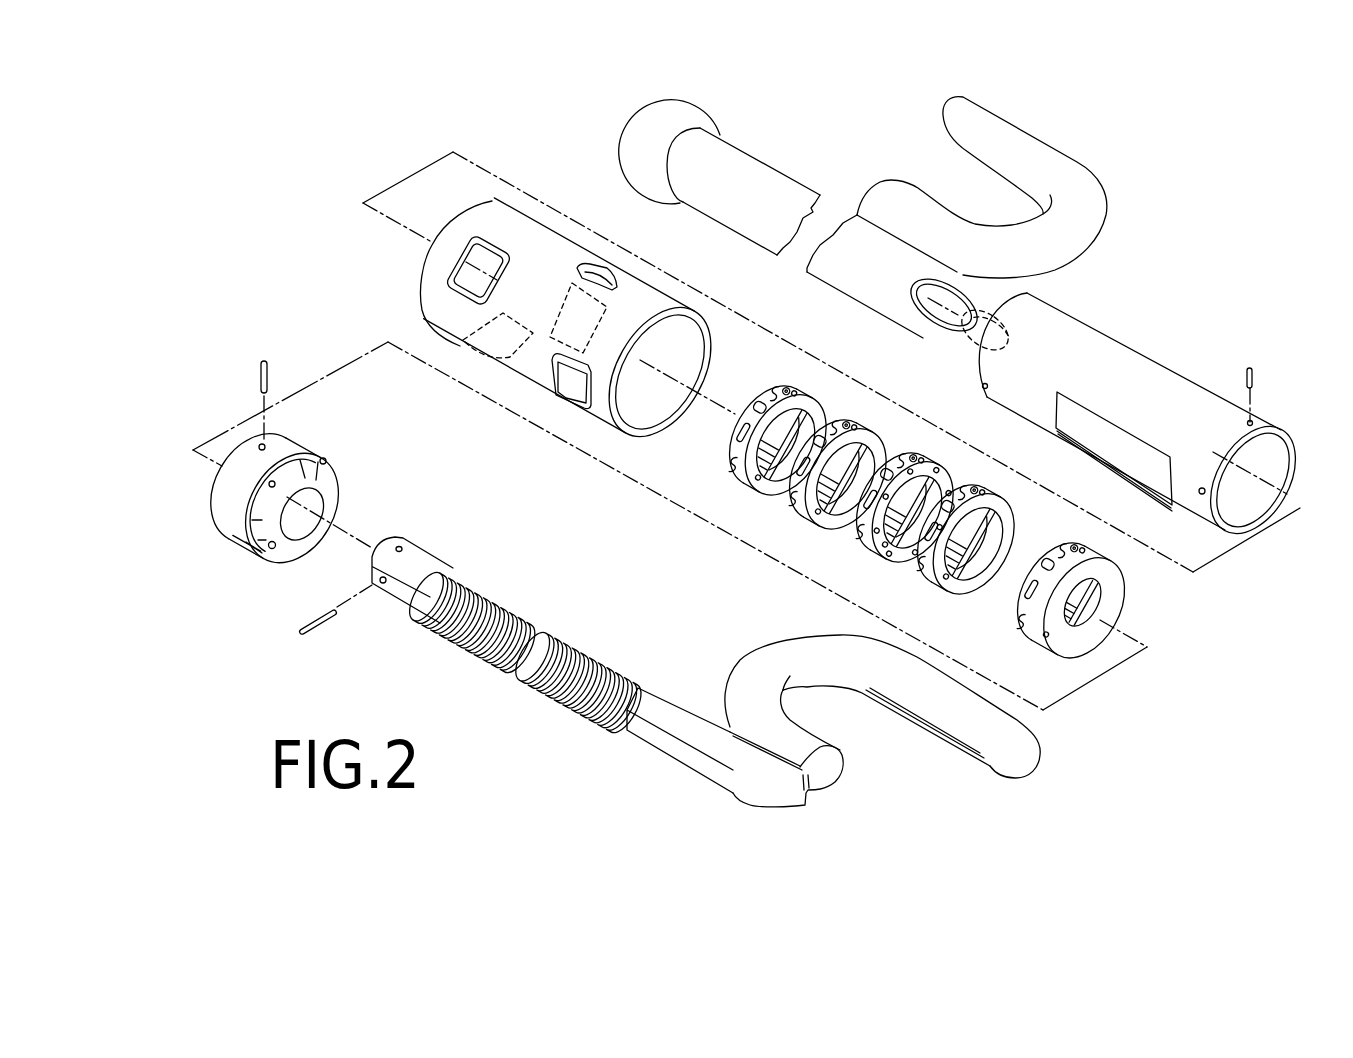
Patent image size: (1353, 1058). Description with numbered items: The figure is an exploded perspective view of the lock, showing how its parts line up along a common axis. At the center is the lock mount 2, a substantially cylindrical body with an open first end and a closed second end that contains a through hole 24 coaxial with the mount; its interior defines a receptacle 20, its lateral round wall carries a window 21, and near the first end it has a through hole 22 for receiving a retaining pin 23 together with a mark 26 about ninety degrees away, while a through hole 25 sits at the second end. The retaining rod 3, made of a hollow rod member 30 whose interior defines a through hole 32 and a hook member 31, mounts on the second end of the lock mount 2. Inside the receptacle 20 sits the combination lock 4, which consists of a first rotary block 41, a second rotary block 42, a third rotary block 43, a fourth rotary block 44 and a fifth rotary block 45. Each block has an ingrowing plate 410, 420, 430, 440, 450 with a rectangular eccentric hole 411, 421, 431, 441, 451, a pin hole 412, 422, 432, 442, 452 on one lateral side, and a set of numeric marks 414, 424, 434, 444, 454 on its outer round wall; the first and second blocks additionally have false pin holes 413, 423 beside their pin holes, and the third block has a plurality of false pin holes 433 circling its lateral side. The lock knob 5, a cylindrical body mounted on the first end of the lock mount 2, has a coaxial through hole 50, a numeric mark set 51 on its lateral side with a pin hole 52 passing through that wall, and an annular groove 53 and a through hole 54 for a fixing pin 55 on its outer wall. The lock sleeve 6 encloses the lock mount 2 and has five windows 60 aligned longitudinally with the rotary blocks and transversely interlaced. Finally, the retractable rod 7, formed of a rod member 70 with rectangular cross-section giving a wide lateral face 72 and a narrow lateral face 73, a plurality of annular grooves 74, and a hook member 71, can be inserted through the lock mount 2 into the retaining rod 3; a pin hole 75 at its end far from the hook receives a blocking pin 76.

The lock mount 2 is at (1135, 425).
The receptacle 20 is at (1222, 516).
The window 21 is at (1133, 455).
The through hole 22 is at (1248, 421).
The retaining pin 23 is at (1253, 372).
The through hole 24 is at (978, 340).
The through hole 25 is at (984, 392).
The mark 26 is at (1200, 493).
The retaining rod 3 is at (798, 170).
The rod member 30 is at (957, 229).
The hook member 31 is at (1033, 162).
The through hole 32 is at (923, 338).
The combination lock 4 is at (1137, 628).
The first rotary block 41 is at (733, 437).
The ingrowing plate 410 is at (804, 425).
The rectangular eccentric hole 411 is at (778, 420).
The pin hole 412 is at (745, 470).
The false pin hole 413 is at (765, 486).
The numeric marks 414 is at (750, 415).
The second rotary block 42 is at (797, 508).
The ingrowing plate 420 is at (873, 460).
The rectangular eccentric hole 421 is at (862, 450).
The pin hole 422 is at (820, 515).
The false pin hole 423 is at (828, 523).
The numeric marks 424 is at (838, 425).
The third rotary block 43 is at (855, 545).
The ingrowing plate 430 is at (940, 482).
The rectangular eccentric hole 431 is at (930, 470).
The pin hole 432 is at (880, 560).
The false pin holes 433 is at (898, 565).
The numeric marks 434 is at (903, 460).
The fourth rotary block 44 is at (953, 597).
The ingrowing plate 440 is at (985, 540).
The rectangular eccentric hole 441 is at (992, 526).
The pin hole 442 is at (975, 590).
The numeric marks 444 is at (980, 495).
The fifth rotary block 45 is at (1028, 637).
The ingrowing plate 450 is at (1100, 587).
The rectangular eccentric hole 451 is at (1078, 592).
The pin hole 452 is at (1055, 658).
The numeric marks 454 is at (1064, 560).
The lock knob 5 is at (280, 514).
The through hole 50 is at (318, 513).
The numeric mark set 51 is at (325, 460).
The pin hole 52 is at (270, 547).
The annular groove 53 is at (245, 540).
The through hole 54 is at (268, 448).
The fixing pin 55 is at (270, 372).
The lock sleeve 6 is at (433, 290).
The windows 60 is at (487, 257).
The retractable rod 7 is at (681, 642).
The rod member 70 is at (703, 777).
The hook member 71 is at (940, 722).
The wide lateral face 72 is at (394, 571).
The narrow lateral face 73 is at (372, 568).
The annular grooves 74 is at (592, 672).
The pin hole 75 is at (385, 584).
The blocking pin 76 is at (322, 624).